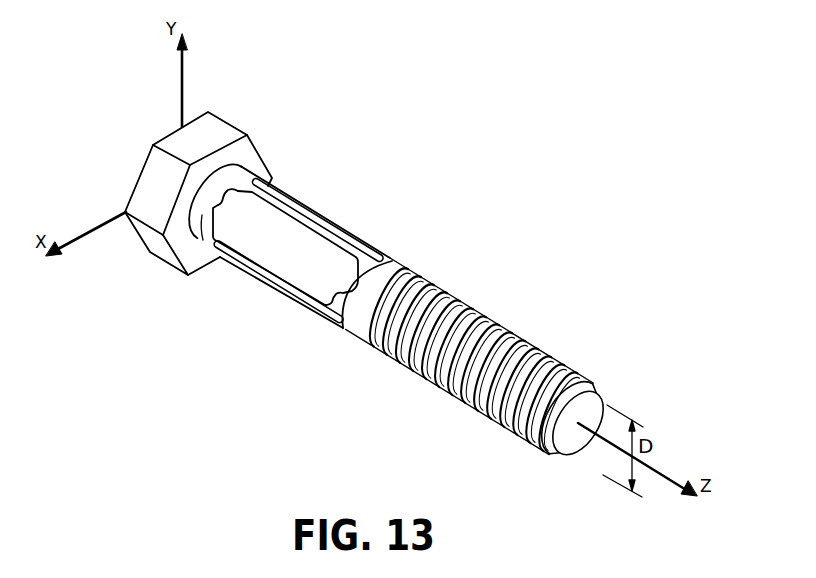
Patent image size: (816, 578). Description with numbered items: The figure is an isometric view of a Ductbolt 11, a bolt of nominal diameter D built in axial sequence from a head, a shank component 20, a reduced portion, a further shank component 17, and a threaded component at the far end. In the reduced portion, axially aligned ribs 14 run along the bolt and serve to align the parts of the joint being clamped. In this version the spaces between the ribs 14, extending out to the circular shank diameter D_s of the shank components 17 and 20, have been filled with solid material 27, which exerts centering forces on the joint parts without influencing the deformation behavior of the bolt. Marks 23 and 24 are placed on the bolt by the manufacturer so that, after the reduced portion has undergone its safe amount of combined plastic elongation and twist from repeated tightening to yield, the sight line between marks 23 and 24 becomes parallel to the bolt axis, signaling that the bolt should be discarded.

The Ductbolt 11 is at (567, 428).
The axially aligned ribs 14 is at (304, 222).
The shank component 17 is at (344, 333).
The shank component 20 is at (187, 274).
The mark 23 is at (223, 200).
The mark 24 is at (388, 259).
The solid material 27 is at (247, 243).